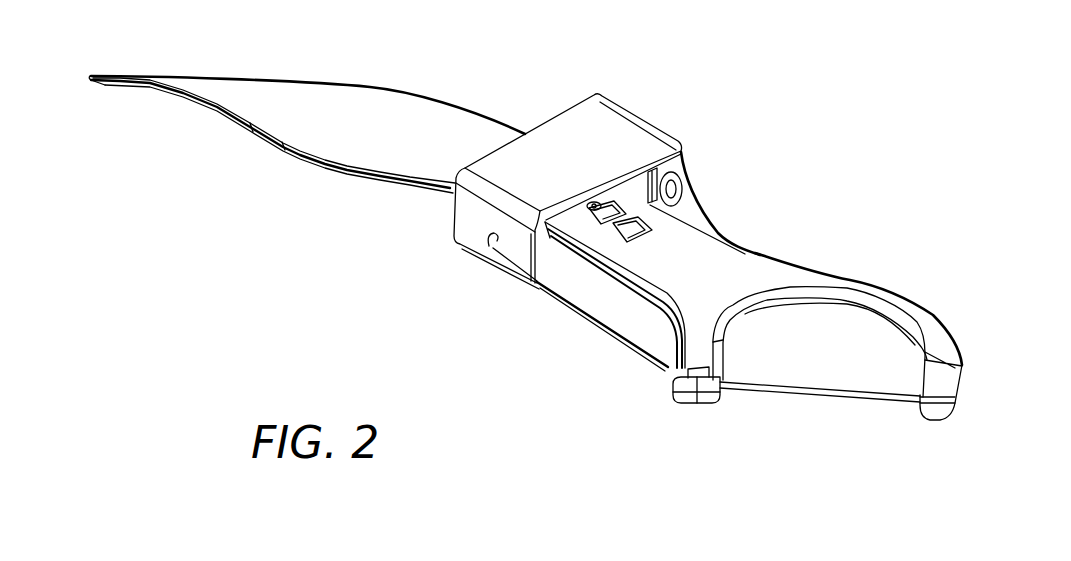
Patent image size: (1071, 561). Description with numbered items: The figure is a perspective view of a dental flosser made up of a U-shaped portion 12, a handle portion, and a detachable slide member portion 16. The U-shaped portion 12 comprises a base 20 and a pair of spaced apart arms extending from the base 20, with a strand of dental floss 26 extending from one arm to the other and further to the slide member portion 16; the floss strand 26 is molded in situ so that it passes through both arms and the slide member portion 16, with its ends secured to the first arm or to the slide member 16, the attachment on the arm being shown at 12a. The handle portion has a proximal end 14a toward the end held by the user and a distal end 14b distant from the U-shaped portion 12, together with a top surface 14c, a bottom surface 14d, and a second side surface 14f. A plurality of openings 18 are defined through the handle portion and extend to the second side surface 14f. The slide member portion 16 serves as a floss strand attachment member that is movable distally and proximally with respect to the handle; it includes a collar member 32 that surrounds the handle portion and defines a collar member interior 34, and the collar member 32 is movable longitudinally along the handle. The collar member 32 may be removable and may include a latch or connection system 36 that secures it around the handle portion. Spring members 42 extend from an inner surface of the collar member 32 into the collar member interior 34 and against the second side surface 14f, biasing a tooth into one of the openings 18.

The U-shaped portion 12 is at (890, 297).
The floss anchor 12a is at (697, 357).
The proximal end 14a is at (87, 78).
The distal end 14b is at (777, 262).
The top surface 14c is at (367, 84).
The bottom surface 14d is at (318, 167).
The second side surface 14f is at (273, 98).
The slide member portion 16 is at (674, 95).
The openings 18 is at (682, 203).
The base 20 is at (848, 284).
The dental floss strand 26 is at (820, 395).
The collar member 32 is at (583, 118).
The collar member interior 34 is at (663, 173).
The connection system 36 is at (697, 169).
The spring members 42 is at (600, 208).